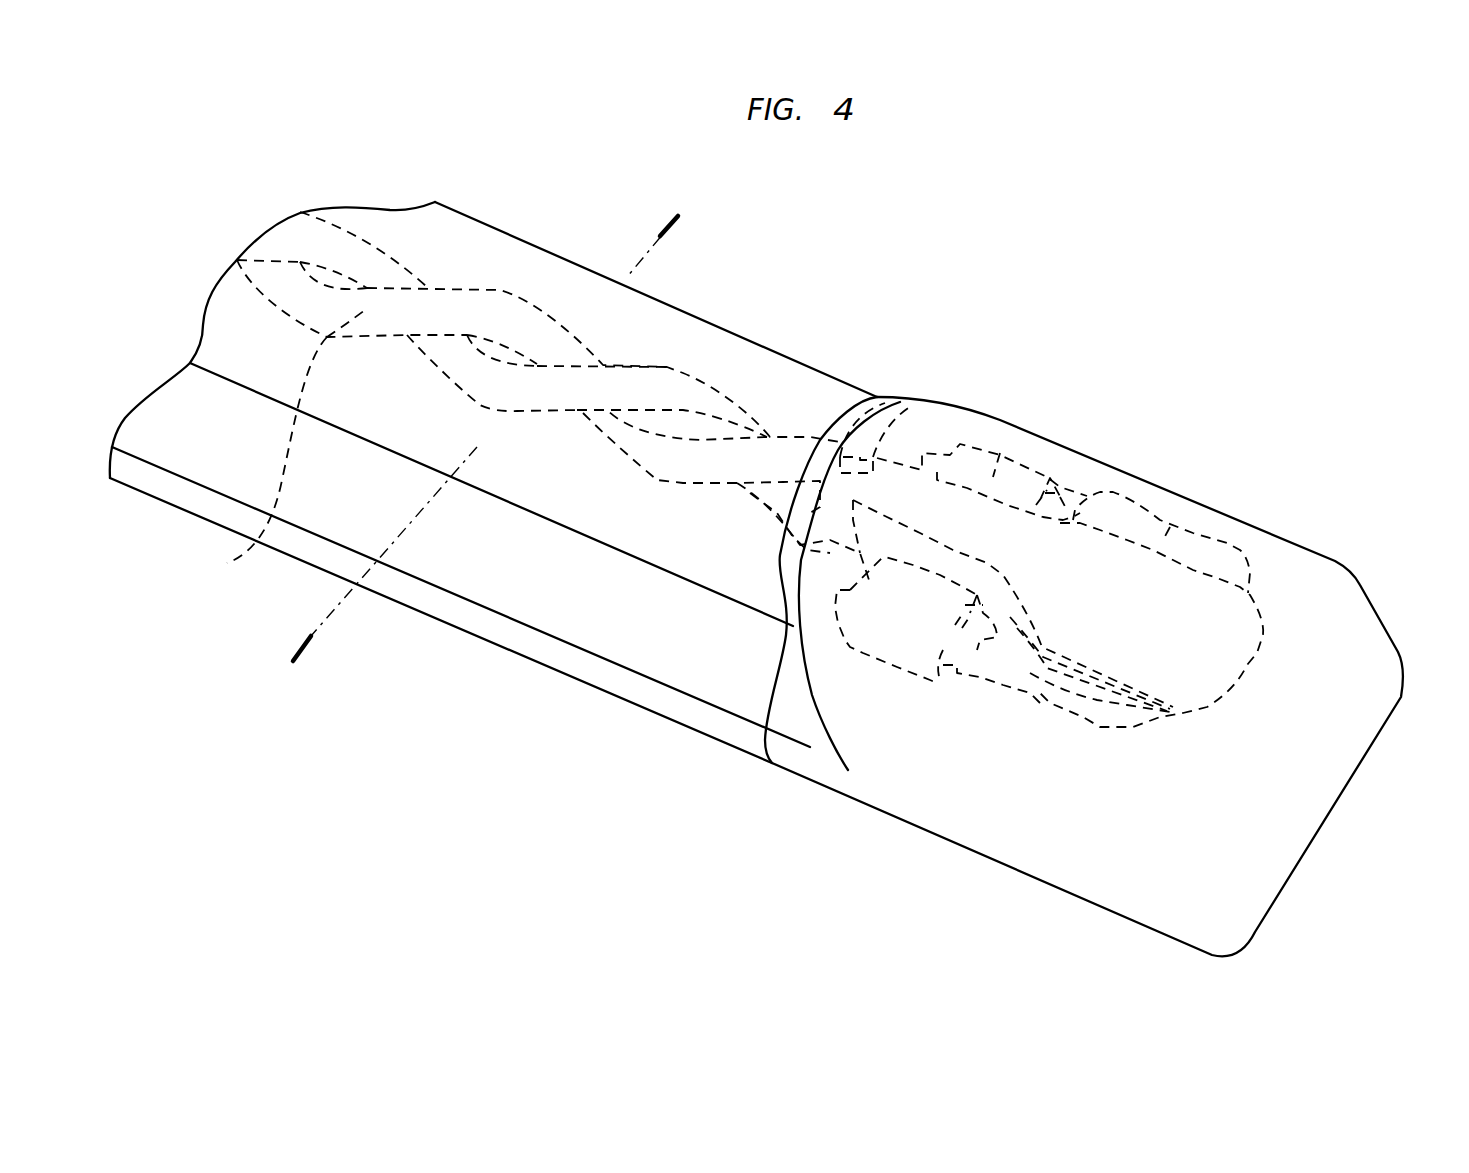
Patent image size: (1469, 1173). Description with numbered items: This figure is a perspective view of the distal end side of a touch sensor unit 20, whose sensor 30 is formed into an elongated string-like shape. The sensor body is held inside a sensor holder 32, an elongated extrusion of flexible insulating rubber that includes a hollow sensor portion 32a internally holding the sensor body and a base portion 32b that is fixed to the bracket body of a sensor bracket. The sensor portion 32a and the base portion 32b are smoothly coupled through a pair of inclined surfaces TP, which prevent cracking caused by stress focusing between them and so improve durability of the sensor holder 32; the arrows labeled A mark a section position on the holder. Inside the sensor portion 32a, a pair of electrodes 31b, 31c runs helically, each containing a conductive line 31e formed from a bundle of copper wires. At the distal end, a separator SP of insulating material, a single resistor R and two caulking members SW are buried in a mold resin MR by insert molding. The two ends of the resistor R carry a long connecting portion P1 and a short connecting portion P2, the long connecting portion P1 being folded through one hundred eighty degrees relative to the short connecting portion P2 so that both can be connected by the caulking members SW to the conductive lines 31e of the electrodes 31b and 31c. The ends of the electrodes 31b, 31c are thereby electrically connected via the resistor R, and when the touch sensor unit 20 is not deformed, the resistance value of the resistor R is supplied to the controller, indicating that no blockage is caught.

The touch sensor unit 20 is at (985, 200).
The sensor 30 is at (1013, 317).
The sensor holder 32 is at (137, 500).
The sensor portion 32a is at (480, 258).
The base portion 32b is at (528, 642).
The electrode 31b is at (680, 370).
The electrode 31c is at (248, 462).
The conductive line 31e is at (903, 403).
The caulking member SW is at (1000, 455).
The long connecting portion P1 is at (1037, 690).
The short connecting portion P2 is at (1065, 505).
The resistor R is at (1170, 527).
The separator SP is at (1163, 633).
The mold resin MR is at (1097, 780).
The inclined surface TP is at (635, 615).
The section line A- A is at (686, 233).